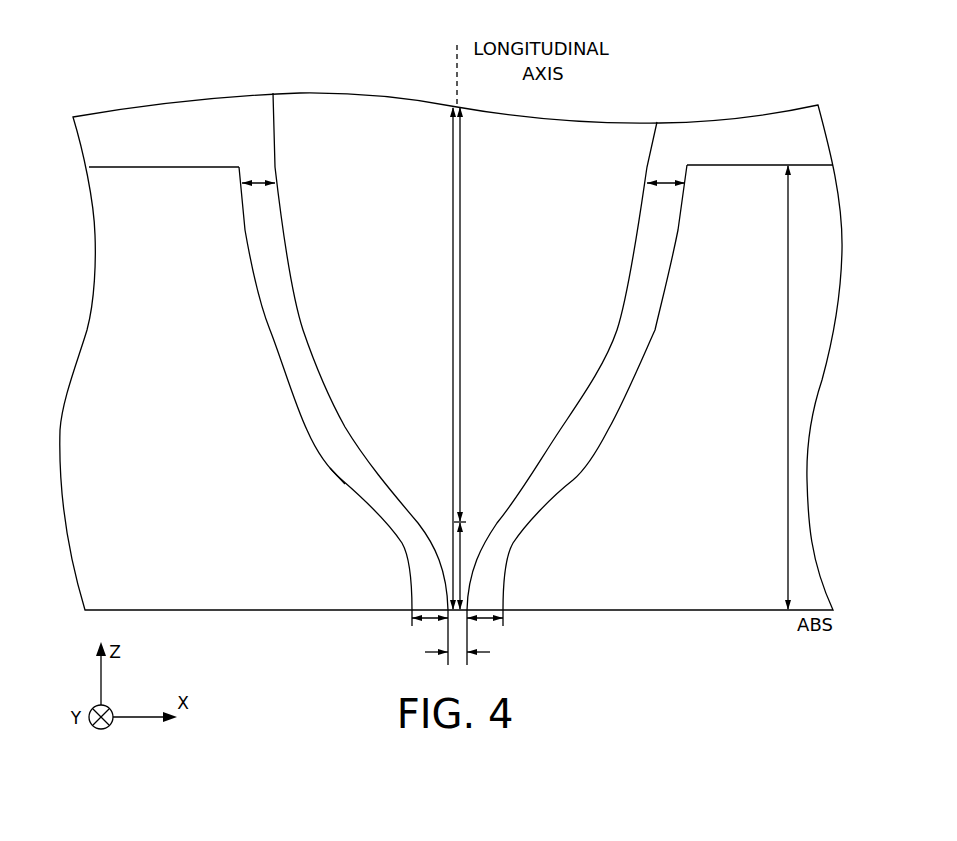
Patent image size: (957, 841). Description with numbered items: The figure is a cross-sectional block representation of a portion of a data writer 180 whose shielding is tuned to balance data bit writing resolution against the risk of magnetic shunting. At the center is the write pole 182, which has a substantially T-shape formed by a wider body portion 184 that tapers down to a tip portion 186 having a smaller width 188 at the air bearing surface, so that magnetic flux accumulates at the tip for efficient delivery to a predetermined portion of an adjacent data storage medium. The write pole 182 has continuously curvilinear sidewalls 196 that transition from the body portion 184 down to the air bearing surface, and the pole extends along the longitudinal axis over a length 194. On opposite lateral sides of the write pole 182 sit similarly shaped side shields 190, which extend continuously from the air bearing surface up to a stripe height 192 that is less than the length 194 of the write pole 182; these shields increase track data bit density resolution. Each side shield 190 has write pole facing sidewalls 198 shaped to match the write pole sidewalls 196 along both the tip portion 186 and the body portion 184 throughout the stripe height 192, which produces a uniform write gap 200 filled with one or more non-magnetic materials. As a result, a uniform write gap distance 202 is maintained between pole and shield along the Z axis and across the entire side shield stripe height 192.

The data writer 180 is at (106, 78).
The write pole 182 is at (477, 351).
The body portion 184 is at (460, 293).
The tip portion 186 is at (463, 547).
The width 188 is at (446, 642).
The side shields 190 is at (230, 588).
The stripe height 192 is at (771, 387).
The length 194 is at (453, 327).
The sidewalls 196 is at (303, 318).
The write pole facing sidewalls 198 is at (657, 327).
The write gap 200 is at (330, 481).
The write gap distance 202 is at (463, 411).